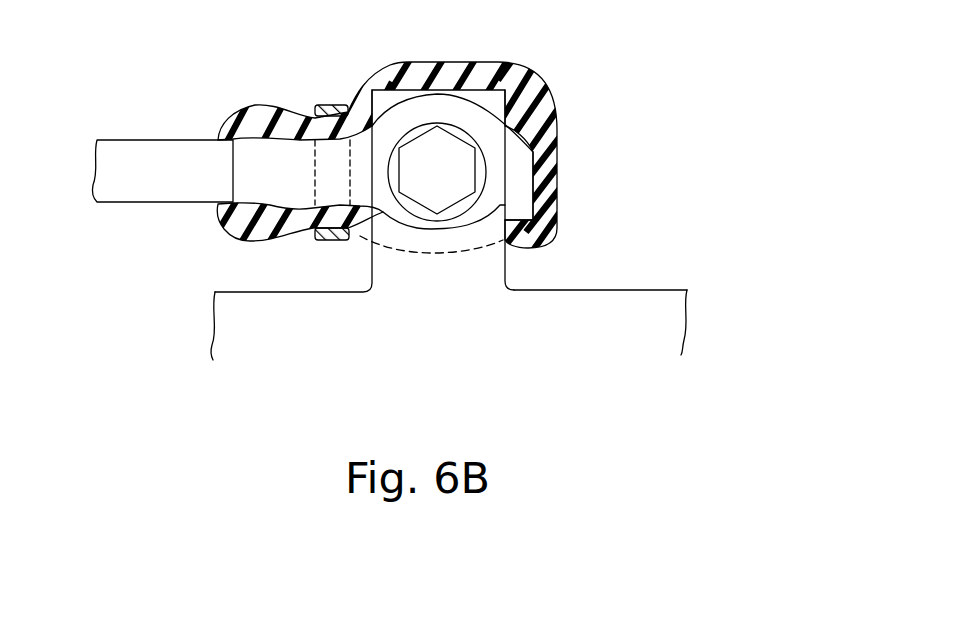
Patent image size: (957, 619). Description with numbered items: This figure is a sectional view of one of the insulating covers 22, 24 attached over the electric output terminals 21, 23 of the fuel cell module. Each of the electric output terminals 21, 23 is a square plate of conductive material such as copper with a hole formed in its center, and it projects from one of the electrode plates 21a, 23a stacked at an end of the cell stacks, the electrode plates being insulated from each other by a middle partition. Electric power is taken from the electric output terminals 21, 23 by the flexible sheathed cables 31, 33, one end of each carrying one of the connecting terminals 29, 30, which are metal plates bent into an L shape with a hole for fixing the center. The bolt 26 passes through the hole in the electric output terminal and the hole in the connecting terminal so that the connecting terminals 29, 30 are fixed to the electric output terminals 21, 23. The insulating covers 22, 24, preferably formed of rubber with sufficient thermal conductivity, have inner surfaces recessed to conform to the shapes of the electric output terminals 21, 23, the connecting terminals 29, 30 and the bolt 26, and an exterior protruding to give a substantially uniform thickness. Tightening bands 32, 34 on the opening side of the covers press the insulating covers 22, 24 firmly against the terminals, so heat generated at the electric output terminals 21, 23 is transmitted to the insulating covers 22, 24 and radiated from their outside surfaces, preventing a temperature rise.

The electric output terminal 21 is at (523, 225).
The electric output terminal 23 is at (523, 225).
The electrode plate 21a is at (675, 322).
The electrode plate 23a is at (657, 320).
The insulating cover 22 is at (500, 152).
The insulating cover 24 is at (555, 115).
The bolt 26 is at (455, 162).
The connecting terminal 29 is at (552, 173).
The connecting terminal 30 is at (513, 175).
The sheathed cable 31 is at (141, 124).
The sheathed cable 33 is at (145, 139).
The tightening band 32 is at (279, 126).
The tightening band 34 is at (321, 105).